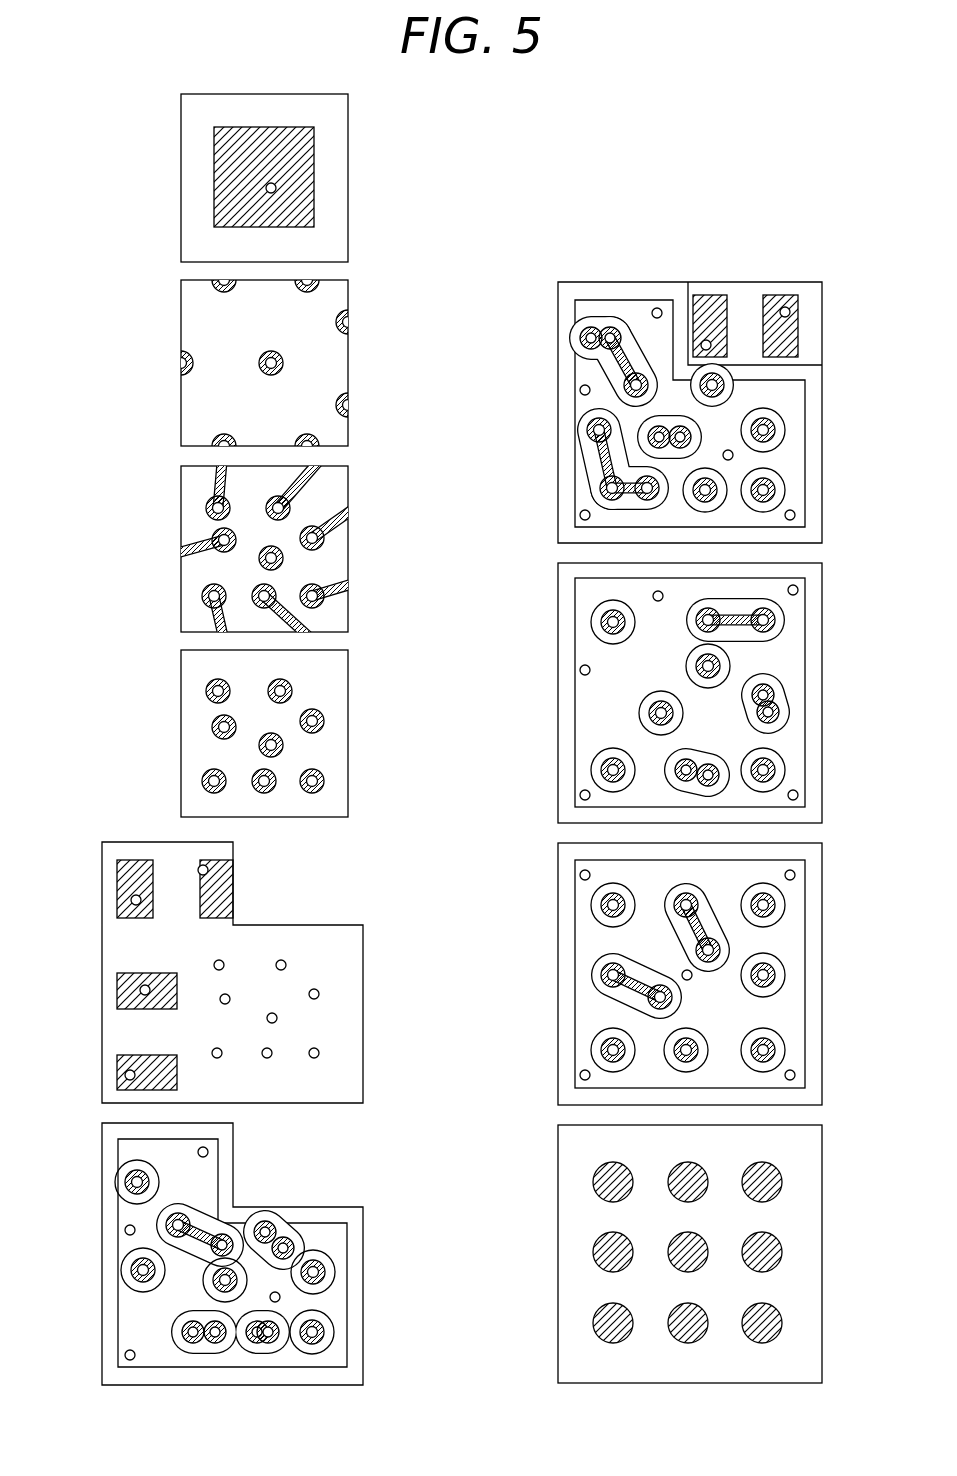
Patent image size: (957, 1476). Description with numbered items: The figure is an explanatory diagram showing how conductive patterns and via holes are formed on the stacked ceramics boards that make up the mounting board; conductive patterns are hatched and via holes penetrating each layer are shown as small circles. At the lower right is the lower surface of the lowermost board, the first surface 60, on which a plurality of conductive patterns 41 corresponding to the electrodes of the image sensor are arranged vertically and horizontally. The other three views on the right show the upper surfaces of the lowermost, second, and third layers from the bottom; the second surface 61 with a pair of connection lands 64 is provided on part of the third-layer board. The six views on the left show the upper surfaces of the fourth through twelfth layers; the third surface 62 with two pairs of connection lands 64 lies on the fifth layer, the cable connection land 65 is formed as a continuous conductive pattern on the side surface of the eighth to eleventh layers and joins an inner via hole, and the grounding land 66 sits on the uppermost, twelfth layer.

The conductive pattern 41 is at (777, 1178).
The first surface 60 is at (800, 1228).
The second surface 61 is at (745, 300).
The third surface 62 is at (118, 947).
The connection land 64 is at (212, 858).
The cable connection land 65 is at (181, 357).
The grounding land 66 is at (215, 178).